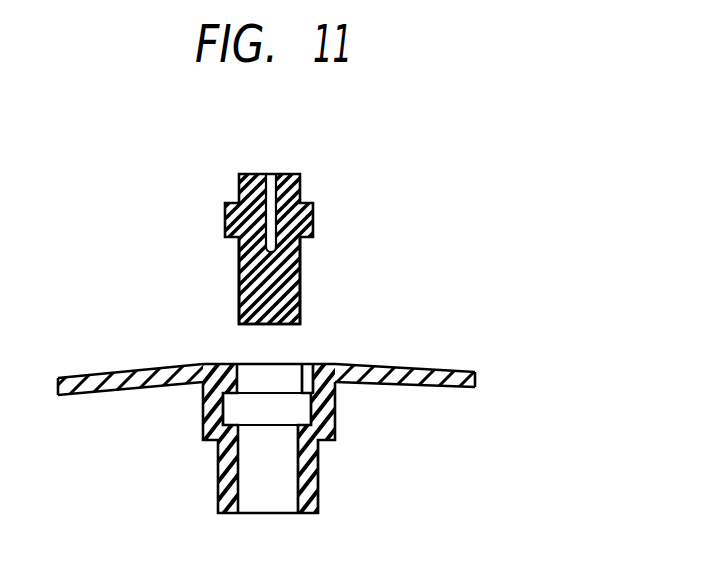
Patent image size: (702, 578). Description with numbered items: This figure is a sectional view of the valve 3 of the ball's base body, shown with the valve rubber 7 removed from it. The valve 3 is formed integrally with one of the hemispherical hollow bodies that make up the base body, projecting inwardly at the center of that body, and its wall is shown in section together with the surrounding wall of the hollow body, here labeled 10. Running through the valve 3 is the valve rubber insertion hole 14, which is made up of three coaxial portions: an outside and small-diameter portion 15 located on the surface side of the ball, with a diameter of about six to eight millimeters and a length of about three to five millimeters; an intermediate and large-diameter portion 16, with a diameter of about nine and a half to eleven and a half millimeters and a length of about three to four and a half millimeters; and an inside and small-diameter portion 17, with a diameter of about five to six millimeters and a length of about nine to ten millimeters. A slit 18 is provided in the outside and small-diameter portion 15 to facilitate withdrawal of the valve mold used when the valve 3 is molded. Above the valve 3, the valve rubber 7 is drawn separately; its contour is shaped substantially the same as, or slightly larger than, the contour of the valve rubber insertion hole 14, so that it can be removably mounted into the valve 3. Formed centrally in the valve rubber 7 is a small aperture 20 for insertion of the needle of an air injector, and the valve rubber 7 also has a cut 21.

The valve 3 is at (191, 492).
The valve rubber 7 is at (300, 178).
The panel 10 is at (477, 380).
The valve rubber insertion hole 14 is at (262, 513).
The outside and small-diameter portion 15 is at (241, 372).
The intermediate and large-diameter portion 16 is at (308, 412).
The inside and small-diameter portion 17 is at (296, 492).
The slit 18 is at (305, 368).
The small aperture 20 is at (270, 173).
The cut 21 is at (296, 293).